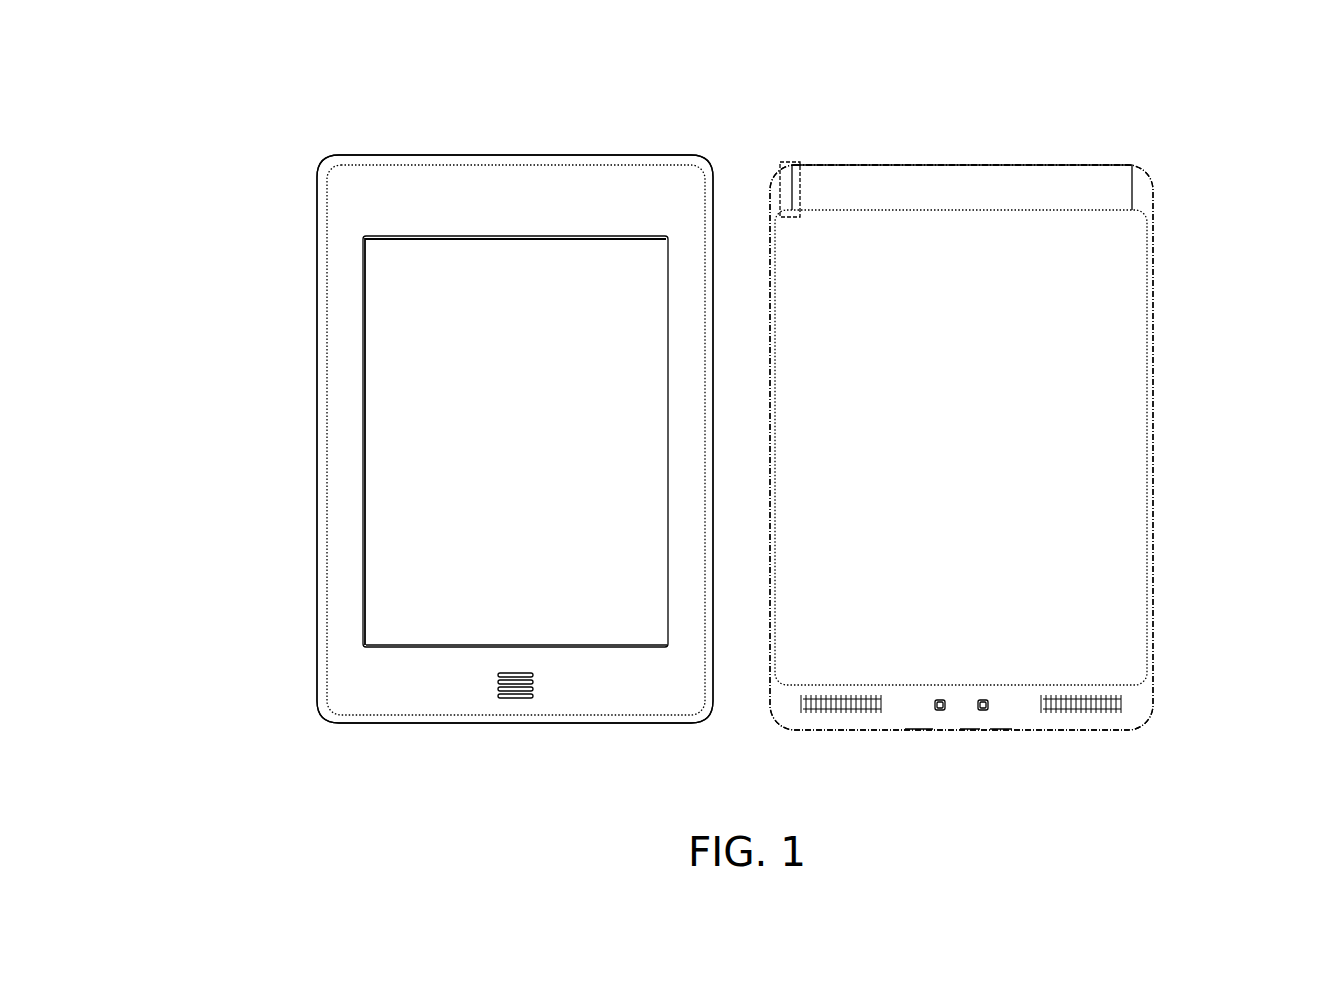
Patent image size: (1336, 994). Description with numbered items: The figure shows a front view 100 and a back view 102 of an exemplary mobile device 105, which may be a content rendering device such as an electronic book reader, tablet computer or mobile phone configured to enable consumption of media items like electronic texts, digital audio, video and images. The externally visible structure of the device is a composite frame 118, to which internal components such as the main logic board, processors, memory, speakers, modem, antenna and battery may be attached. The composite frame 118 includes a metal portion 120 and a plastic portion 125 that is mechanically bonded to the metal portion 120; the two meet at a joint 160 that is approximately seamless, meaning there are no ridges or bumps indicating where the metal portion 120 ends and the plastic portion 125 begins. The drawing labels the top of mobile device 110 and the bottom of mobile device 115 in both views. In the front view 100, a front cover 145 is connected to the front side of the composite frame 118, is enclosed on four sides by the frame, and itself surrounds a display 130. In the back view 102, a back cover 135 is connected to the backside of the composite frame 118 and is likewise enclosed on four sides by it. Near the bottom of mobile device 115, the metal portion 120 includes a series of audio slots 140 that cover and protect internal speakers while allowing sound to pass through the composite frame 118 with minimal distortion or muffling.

The front view 100 is at (612, 815).
The back view 102 is at (1012, 813).
The mobile device 105 is at (333, 120).
The top of mobile device 110 is at (724, 137).
The bottom of mobile device 115 is at (742, 475).
The composite frame 118 is at (1187, 692).
The metal portion 120 is at (352, 720).
The plastic portion 125 is at (657, 158).
The display 130 is at (512, 438).
The back cover 135 is at (974, 443).
The audio slots 140 is at (1097, 707).
The front cover 145 is at (683, 693).
The joint 160 is at (795, 158).